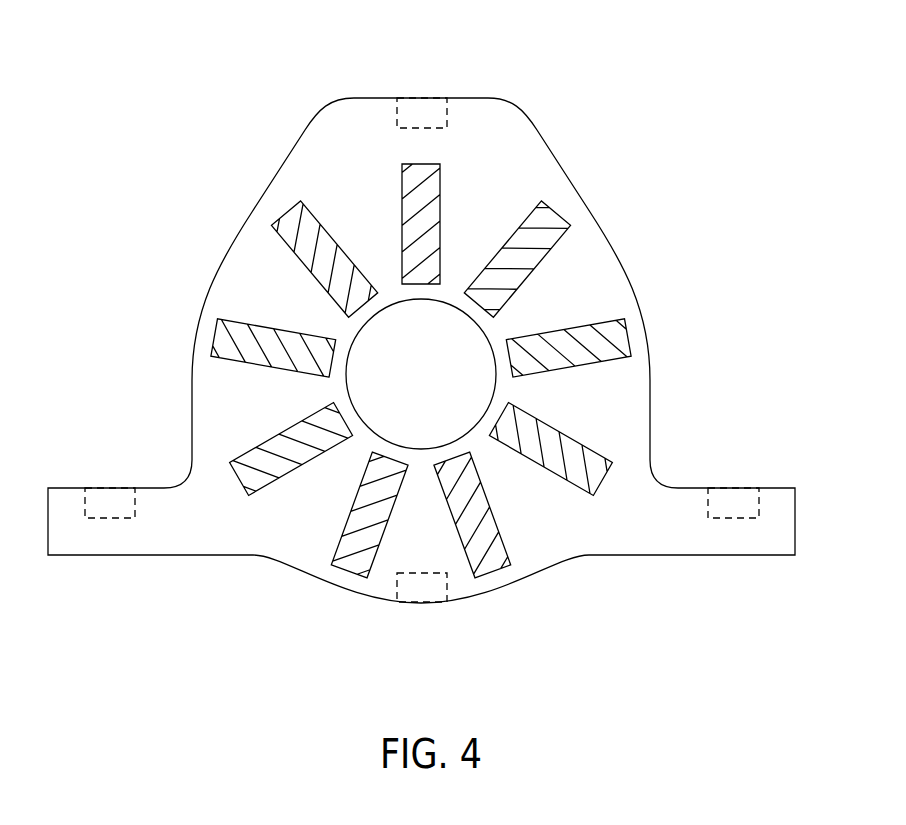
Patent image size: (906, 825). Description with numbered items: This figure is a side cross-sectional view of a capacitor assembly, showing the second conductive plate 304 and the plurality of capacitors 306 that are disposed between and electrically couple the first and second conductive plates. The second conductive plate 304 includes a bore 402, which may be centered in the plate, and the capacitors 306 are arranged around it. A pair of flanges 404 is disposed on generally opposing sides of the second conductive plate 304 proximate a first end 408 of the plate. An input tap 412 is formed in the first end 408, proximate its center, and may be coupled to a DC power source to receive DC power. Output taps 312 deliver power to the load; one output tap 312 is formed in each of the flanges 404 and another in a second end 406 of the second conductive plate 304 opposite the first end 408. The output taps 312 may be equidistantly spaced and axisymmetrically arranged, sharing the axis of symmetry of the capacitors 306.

The second conductive plate 304 is at (553, 157).
The plurality of capacitors 306 is at (560, 243).
The output tap 312 is at (425, 112).
The bore 402 is at (441, 395).
The flange 404 is at (61, 487).
The second end 406 is at (426, 348).
The first end 408 is at (467, 625).
The input tap 412 is at (425, 583).